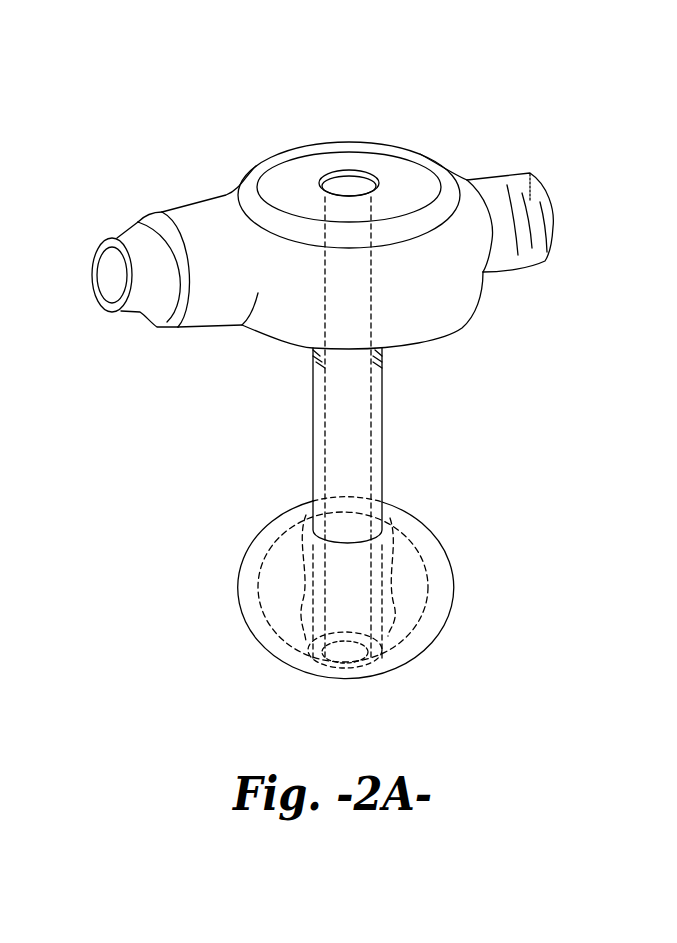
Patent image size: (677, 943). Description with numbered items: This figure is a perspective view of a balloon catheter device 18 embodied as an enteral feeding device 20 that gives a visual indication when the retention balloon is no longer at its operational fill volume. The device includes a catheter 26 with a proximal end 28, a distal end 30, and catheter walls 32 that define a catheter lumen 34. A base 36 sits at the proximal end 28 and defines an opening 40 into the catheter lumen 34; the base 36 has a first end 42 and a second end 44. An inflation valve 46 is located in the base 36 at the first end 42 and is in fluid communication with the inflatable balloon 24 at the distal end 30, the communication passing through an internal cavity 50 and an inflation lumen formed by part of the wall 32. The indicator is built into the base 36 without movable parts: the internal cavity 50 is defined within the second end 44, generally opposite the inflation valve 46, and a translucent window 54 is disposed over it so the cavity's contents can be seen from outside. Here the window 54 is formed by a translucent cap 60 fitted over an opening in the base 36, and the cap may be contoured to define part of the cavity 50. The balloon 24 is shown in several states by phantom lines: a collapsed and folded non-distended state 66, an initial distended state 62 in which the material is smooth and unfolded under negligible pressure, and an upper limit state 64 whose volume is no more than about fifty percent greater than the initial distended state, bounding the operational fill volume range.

The balloon catheter device 18 is at (257, 94).
The enteral feeding device 20 is at (511, 118).
The inflatable balloon 24 is at (455, 583).
The catheter 26 is at (410, 400).
The proximal end 28 is at (297, 357).
The distal end 30 is at (285, 647).
The catheter walls 32 is at (382, 432).
The catheter lumen 34 is at (348, 438).
The base 36 is at (453, 310).
The opening 40 is at (389, 134).
The first end 42 is at (159, 196).
The second end 44 is at (505, 277).
The inflation valve 46 is at (117, 237).
The internal cavity 50 is at (530, 173).
The translucent window 54 is at (585, 211).
The translucent cap 60 is at (553, 260).
The initial distended state 62 is at (423, 557).
The upper limit state 64 is at (428, 644).
The non-distended state 66 is at (295, 588).